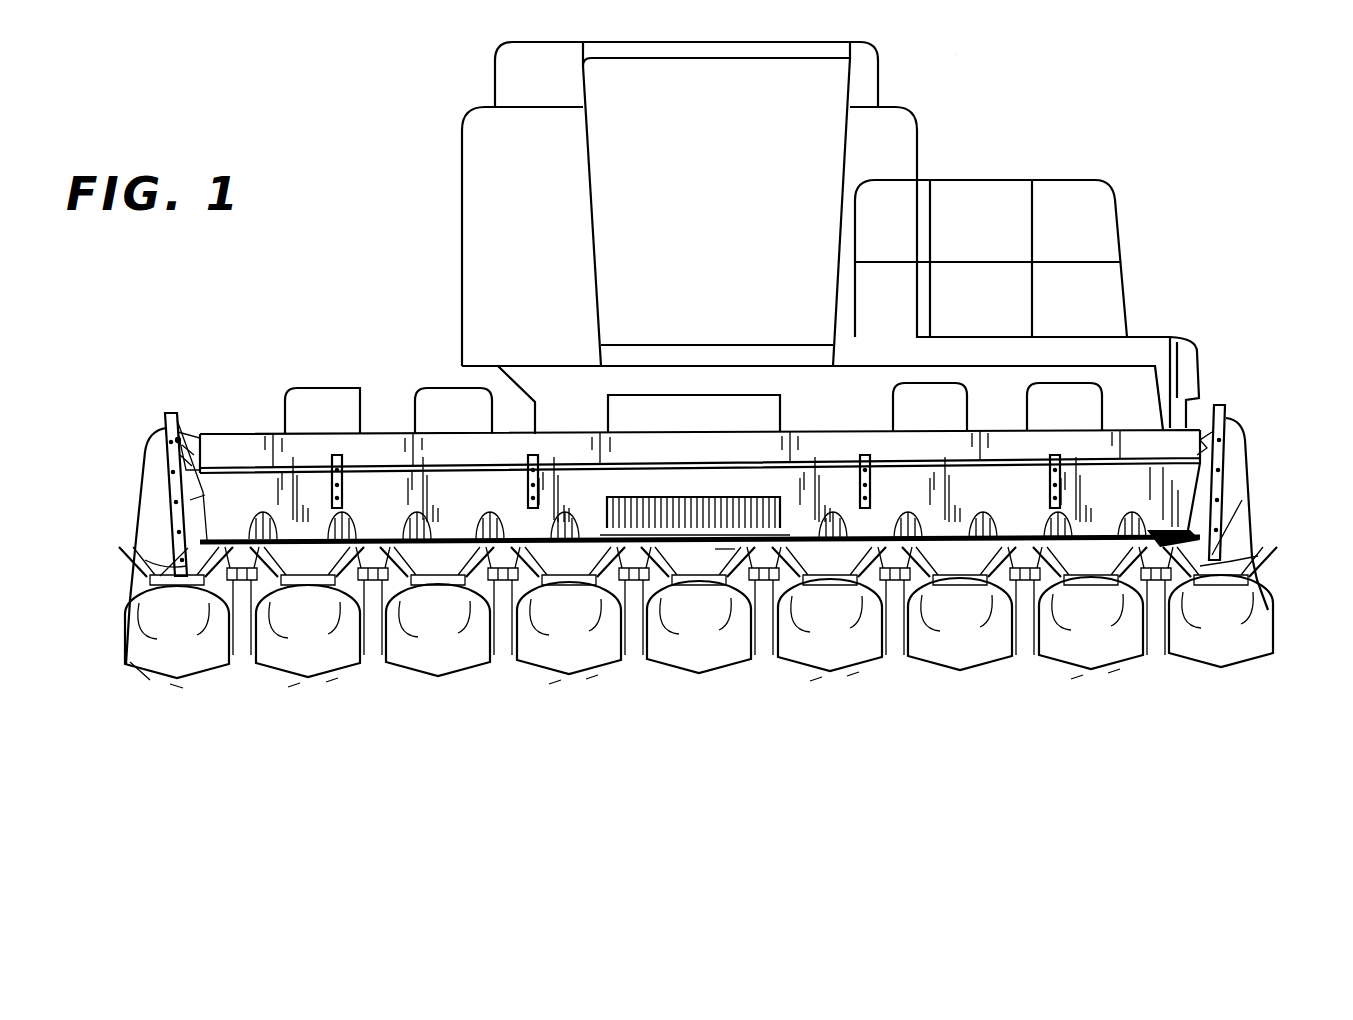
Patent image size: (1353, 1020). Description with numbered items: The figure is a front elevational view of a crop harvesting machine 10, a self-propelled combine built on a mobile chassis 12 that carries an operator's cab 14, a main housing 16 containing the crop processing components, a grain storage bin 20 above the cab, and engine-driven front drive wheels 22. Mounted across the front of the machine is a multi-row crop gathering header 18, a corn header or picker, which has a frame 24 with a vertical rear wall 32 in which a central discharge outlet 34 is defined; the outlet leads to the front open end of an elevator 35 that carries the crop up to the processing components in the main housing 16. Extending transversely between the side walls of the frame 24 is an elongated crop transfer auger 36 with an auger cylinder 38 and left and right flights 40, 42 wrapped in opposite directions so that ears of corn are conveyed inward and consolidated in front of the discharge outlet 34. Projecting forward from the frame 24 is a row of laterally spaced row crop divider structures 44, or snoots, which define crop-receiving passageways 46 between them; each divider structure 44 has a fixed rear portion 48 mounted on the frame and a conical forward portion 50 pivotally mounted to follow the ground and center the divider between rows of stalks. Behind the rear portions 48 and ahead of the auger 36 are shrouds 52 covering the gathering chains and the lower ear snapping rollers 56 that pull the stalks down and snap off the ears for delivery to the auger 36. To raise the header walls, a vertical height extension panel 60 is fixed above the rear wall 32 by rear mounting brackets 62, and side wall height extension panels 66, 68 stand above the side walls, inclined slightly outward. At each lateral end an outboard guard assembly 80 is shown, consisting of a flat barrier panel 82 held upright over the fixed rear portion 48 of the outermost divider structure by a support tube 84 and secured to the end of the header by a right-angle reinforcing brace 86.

The crop harvesting machine 10 is at (955, 55).
The mobile chassis 12 is at (450, 377).
The operator's cab 14 is at (727, 193).
The main housing 16 is at (460, 209).
The multi-row crop gathering header 18 is at (271, 433).
The grain storage bin 20 is at (880, 92).
The front drive wheels 22 is at (346, 395).
The frame 24 is at (206, 495).
The vertical rear wall 32 is at (494, 480).
The central discharge outlet 34 is at (663, 512).
The elevator 35 is at (756, 405).
The crop transfer auger 36 is at (725, 546).
The auger cylinder 38 is at (586, 536).
The left flight 40 is at (985, 516).
The right flight 42 is at (352, 522).
The row crop divider structures 44 is at (181, 680).
The crop-receiving passageways 46 is at (699, 633).
The rear portion 48 is at (1278, 624).
The forward portion 50 is at (158, 676).
The shrouds 52 is at (1101, 566).
The lower ear snapping rollers 56 is at (1202, 622).
The vertical height extension panel 60 is at (1113, 440).
The rear mounting brackets 62 is at (545, 480).
The side wall vertical height extension panel 66 is at (1210, 405).
The side wall vertical height extension panel 68 is at (182, 438).
The outboard guard assembly 80 is at (146, 432).
The barrier panel 82 is at (190, 497).
The support tube 84 is at (140, 567).
The reinforcing brace 86 is at (190, 450).